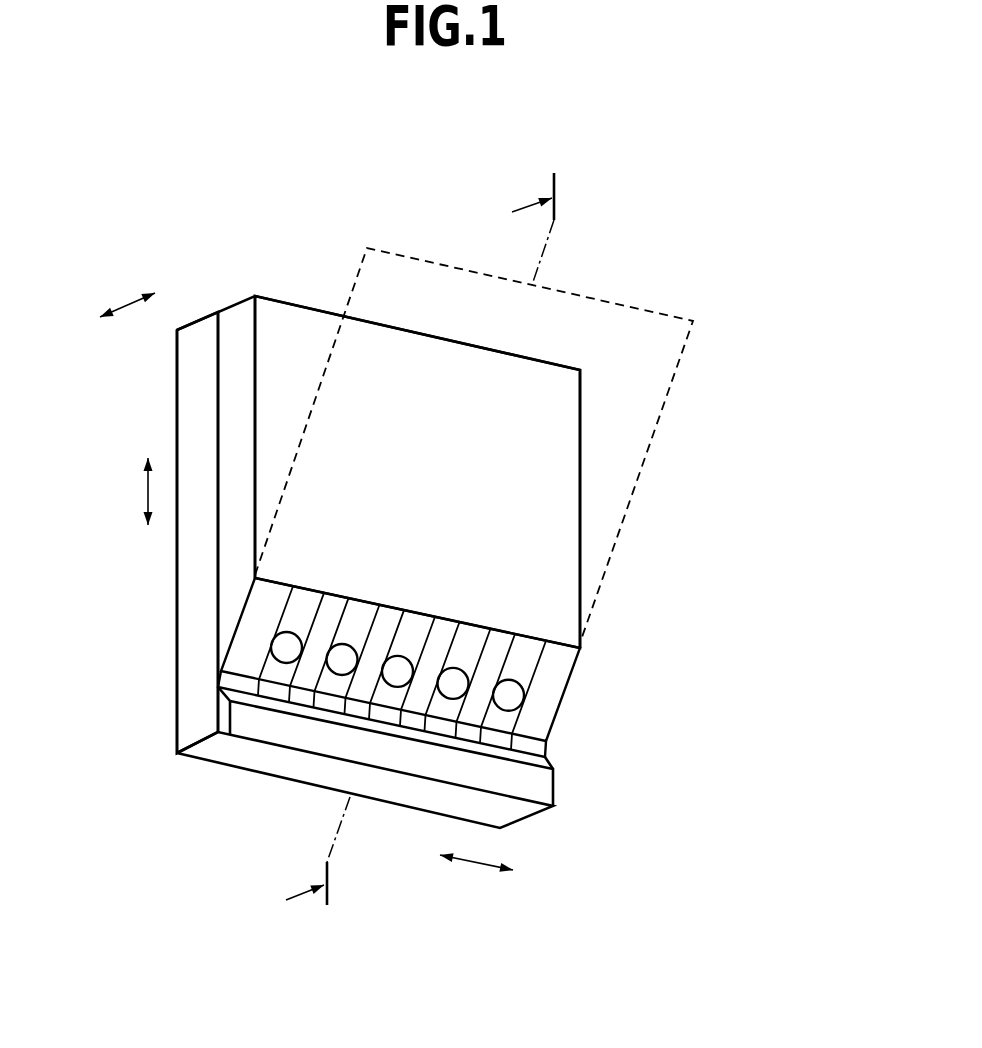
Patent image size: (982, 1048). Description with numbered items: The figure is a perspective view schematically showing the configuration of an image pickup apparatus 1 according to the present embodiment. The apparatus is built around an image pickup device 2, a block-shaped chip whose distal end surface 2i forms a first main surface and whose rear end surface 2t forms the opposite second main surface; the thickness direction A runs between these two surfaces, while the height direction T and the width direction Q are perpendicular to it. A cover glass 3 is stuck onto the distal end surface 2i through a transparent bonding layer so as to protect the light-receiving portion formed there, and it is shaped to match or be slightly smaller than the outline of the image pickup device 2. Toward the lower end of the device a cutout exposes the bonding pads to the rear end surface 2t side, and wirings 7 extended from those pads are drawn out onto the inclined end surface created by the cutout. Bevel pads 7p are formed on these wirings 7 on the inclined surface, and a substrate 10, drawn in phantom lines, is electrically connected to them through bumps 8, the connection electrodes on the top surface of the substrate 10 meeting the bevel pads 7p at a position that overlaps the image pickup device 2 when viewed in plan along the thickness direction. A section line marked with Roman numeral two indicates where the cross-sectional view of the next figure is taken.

The image pickup apparatus 1 is at (713, 380).
The image pickup device 2 is at (237, 312).
The distal end surface 2i is at (220, 398).
The rear end surface 2t is at (285, 338).
The cover glass 3 is at (202, 327).
The wirings 7 is at (527, 647).
The bevel pads 7p is at (402, 668).
The bumps 8 is at (343, 647).
The substrate 10 is at (648, 400).